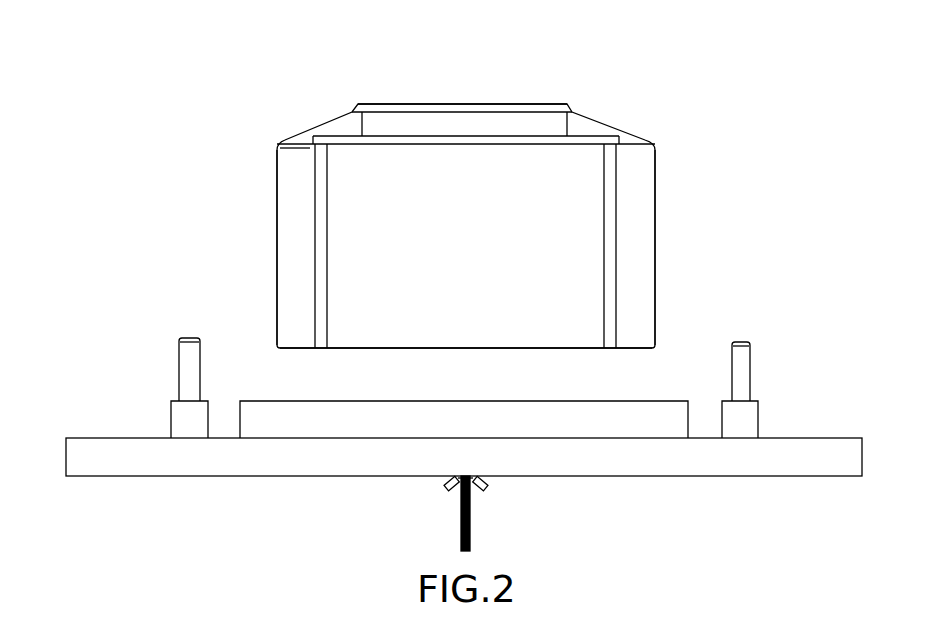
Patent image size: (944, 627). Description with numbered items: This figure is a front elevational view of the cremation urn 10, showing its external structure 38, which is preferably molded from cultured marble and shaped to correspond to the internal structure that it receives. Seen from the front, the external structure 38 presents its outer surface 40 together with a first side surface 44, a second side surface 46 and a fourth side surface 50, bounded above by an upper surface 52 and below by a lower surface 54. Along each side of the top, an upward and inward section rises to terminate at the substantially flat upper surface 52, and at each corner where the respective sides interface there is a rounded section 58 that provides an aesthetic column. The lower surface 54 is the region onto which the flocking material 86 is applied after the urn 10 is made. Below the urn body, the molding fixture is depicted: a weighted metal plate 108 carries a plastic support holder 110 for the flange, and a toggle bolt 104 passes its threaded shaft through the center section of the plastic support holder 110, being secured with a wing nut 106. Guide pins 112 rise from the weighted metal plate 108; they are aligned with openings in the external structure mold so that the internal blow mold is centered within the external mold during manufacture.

The cremation urn 10 is at (139, 61).
The external structure 38 is at (544, 226).
The outer surface 40 is at (544, 226).
The first side surface 44 is at (560, 217).
The second side surface 46 is at (655, 265).
The fourth side surface 50 is at (277, 260).
The upper surface 52 is at (455, 103).
The lower surface 54 is at (522, 330).
The rounded section 58 is at (290, 180).
The flocking material 86 is at (587, 350).
The toggle bolt 104 is at (460, 522).
The wing nut 106 is at (480, 485).
The weighted metal plate 108 is at (127, 457).
The plastic support holder 110 is at (353, 420).
The guide pins 112 is at (740, 372).